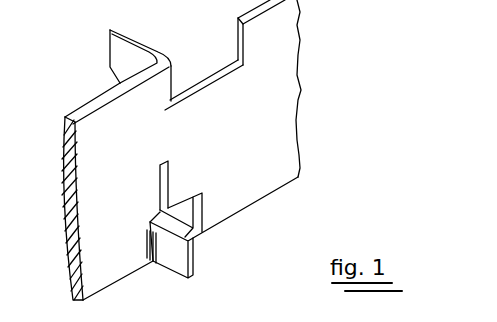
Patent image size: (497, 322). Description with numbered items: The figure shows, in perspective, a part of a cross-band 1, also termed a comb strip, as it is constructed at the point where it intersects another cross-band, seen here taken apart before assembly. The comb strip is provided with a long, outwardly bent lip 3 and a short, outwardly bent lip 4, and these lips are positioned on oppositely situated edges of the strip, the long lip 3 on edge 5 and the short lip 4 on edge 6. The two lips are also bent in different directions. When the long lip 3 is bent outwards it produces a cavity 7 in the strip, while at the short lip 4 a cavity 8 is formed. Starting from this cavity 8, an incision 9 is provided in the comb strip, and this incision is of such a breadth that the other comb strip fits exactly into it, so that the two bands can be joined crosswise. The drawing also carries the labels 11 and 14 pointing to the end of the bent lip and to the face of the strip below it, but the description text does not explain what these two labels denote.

The cross-band 1 is at (299, 100).
The long outwardly bent lip 3 is at (138, 33).
The short outwardly bent lip 4 is at (170, 272).
The edge 5 is at (81, 106).
The edge 6 is at (252, 205).
The cavity 7 is at (202, 67).
The cavity 8 is at (192, 216).
The incision 9 is at (158, 186).
The tab end face 11 is at (118, 50).
The plate face 14 is at (151, 98).